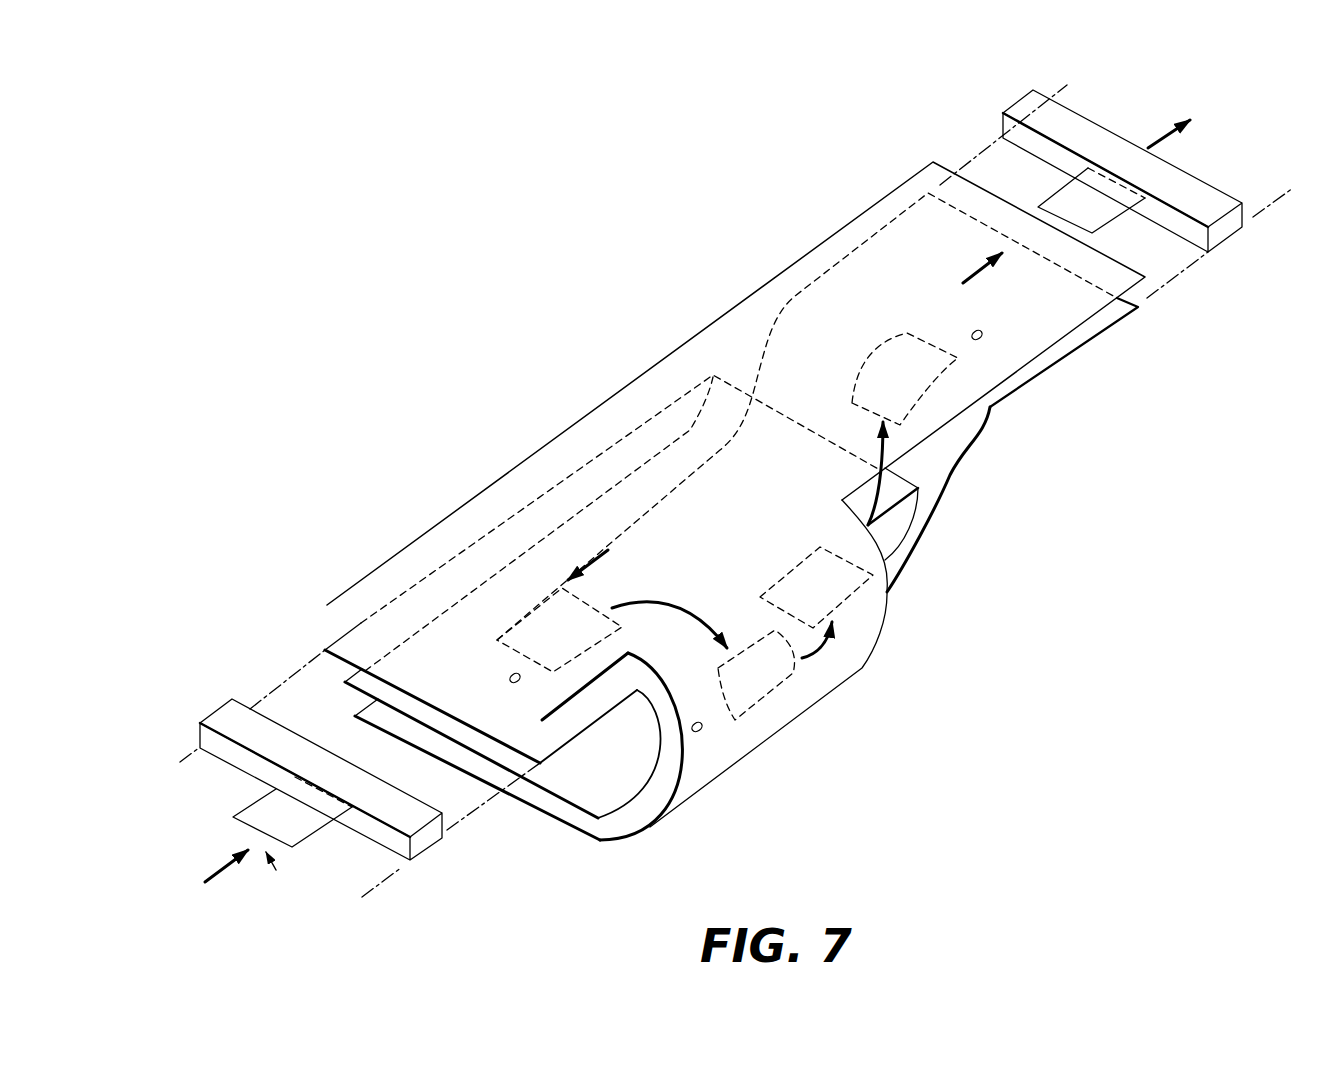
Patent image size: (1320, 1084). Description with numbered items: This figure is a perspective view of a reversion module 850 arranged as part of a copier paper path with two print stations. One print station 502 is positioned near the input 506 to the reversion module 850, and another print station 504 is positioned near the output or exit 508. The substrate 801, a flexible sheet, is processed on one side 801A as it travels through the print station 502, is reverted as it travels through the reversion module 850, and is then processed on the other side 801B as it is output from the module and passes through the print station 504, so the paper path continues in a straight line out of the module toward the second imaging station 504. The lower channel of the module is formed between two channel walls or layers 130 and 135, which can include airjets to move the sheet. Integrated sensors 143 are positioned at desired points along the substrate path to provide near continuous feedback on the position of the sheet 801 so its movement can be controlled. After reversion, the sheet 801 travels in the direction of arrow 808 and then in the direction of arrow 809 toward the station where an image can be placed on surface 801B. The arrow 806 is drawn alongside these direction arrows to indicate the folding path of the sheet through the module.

The channel wall layer 130 is at (443, 731).
The channel wall layer 135 is at (487, 787).
The integrated sensor 143 is at (514, 684).
The print station 502 is at (225, 718).
The print station 504 is at (1037, 112).
The input 506 is at (220, 870).
The output 508 is at (1152, 121).
The substrate 801 is at (1005, 285).
The first side 801A is at (540, 623).
The second side 801B is at (902, 363).
The folding direction 806 is at (673, 605).
The arrow 808 is at (825, 652).
The arrow 809 is at (918, 488).
The reversion module 850 is at (578, 421).